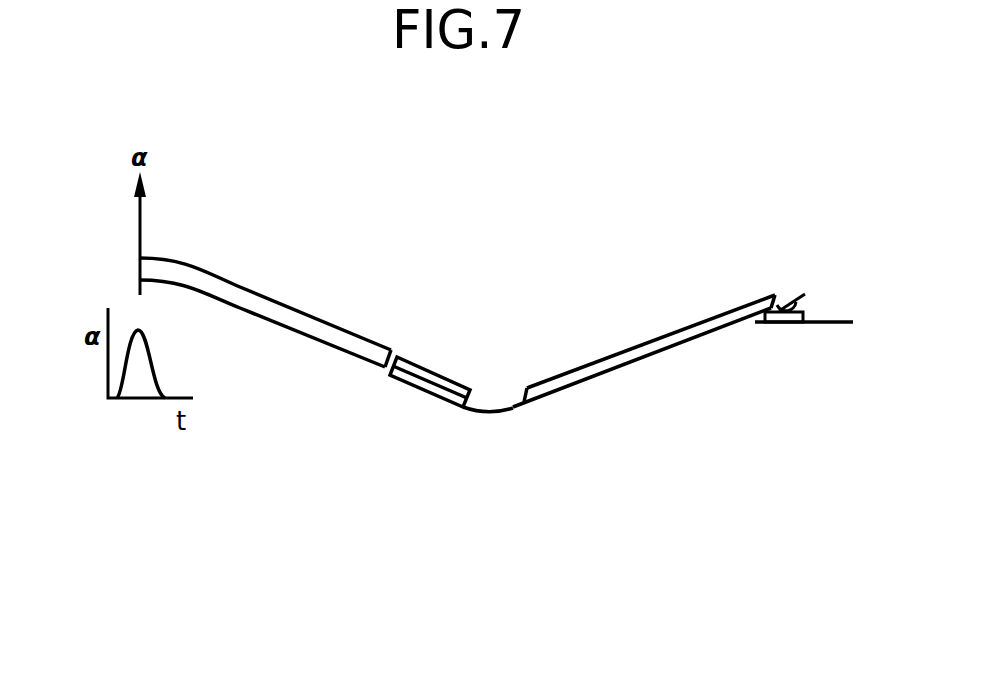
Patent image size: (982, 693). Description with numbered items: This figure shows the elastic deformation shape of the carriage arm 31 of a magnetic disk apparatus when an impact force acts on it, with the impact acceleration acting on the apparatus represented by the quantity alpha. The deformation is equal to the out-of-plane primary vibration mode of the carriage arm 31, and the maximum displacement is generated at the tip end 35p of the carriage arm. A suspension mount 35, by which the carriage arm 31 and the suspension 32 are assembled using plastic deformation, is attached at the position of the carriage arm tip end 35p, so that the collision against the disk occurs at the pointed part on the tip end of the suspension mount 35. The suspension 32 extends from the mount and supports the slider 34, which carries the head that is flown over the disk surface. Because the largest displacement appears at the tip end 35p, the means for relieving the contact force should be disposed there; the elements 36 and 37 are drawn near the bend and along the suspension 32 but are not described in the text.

The carriage arm 31 is at (293, 305).
The suspension 32 is at (585, 380).
The slider 34 is at (788, 324).
The suspension mount 35 is at (427, 397).
The tip end of the carriage arm 35p is at (462, 408).
The hinge portion 36 is at (495, 412).
The ramp layer 37 is at (603, 358).